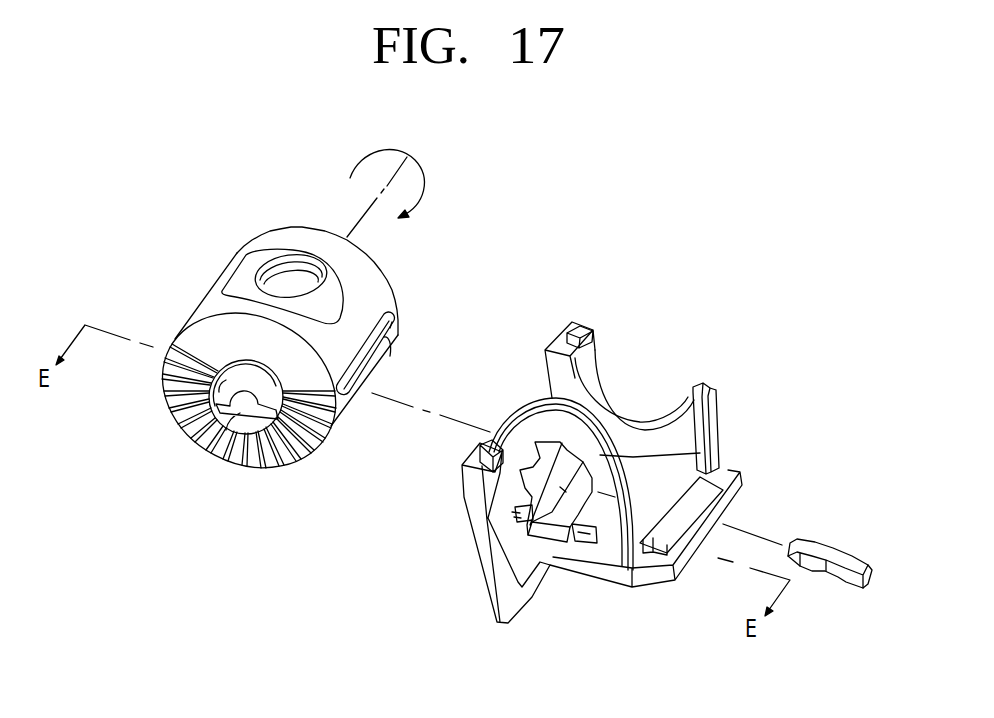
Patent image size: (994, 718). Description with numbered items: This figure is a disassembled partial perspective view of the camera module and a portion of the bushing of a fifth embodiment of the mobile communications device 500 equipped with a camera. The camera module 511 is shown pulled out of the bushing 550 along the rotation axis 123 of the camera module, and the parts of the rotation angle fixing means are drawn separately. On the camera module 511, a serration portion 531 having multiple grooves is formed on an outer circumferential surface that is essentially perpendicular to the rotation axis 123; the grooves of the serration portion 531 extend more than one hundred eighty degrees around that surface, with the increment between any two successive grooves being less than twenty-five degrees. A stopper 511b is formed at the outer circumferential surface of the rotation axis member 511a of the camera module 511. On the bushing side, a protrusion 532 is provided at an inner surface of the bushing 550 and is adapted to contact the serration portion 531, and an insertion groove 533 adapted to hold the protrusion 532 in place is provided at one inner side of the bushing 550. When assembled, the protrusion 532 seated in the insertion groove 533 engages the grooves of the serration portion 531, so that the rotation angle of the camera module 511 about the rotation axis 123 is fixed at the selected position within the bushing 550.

The rotation axis 123 is at (366, 221).
The mobile communications device 500 is at (523, 152).
The camera module 511 is at (261, 391).
The rotation axis member 511a is at (167, 380).
The stopper 511b is at (217, 453).
The serration portion 531 is at (282, 453).
The protrusion 532 is at (836, 535).
The insertion groove 533 is at (540, 550).
The bushing 550 is at (718, 432).